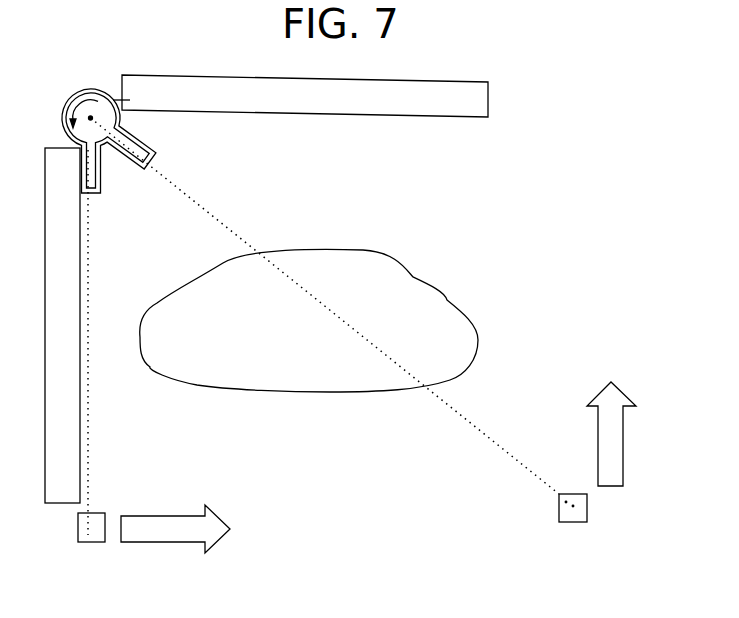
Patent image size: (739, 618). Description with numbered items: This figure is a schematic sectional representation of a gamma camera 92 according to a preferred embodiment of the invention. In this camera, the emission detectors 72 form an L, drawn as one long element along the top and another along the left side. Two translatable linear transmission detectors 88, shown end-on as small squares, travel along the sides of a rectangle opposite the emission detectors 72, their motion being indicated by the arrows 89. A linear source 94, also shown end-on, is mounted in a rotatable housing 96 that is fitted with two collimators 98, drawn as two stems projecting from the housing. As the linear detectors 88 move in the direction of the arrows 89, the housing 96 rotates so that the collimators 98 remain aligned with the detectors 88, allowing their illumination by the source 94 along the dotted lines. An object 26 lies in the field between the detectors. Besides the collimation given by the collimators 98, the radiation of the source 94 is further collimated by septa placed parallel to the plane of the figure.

The object 26 is at (308, 257).
The emission detectors 72 is at (435, 90).
The translatable linear transmission detectors 88 is at (97, 543).
The arrows 89 is at (170, 532).
The gamma camera 92 is at (500, 232).
The linear source 94 is at (90, 116).
The rotatable housing 96 is at (63, 107).
The collimators 98 is at (143, 158).